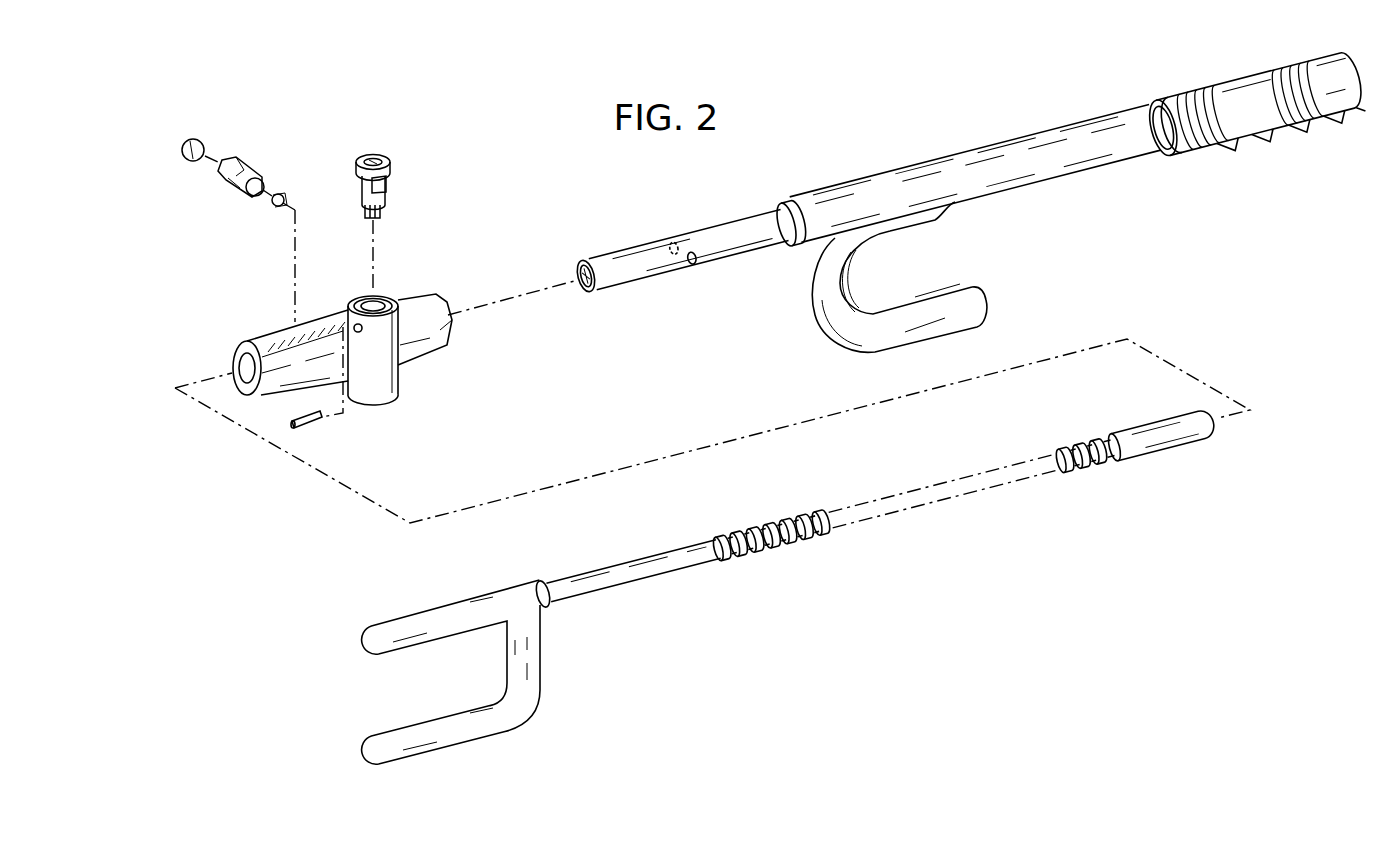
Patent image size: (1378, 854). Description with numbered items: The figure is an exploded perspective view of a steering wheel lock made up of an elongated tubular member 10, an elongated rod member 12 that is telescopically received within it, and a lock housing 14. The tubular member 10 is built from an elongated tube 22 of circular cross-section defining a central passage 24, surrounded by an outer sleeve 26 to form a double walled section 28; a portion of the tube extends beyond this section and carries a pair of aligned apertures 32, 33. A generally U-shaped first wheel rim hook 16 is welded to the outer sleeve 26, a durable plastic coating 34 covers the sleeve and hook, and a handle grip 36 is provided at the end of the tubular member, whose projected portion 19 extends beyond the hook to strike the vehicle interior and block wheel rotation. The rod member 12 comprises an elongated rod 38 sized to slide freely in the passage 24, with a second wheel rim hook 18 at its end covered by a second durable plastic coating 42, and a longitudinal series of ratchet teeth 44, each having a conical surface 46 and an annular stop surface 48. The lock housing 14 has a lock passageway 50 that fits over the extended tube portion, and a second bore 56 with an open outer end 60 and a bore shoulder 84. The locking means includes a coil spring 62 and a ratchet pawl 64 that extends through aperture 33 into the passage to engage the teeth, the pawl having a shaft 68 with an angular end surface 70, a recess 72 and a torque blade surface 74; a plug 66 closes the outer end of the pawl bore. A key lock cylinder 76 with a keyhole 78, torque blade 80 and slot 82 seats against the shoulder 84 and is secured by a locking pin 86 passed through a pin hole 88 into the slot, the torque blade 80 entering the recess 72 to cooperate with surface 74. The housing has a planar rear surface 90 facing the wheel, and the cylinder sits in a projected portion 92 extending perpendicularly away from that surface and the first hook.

The elongated tubular member 10 is at (970, 201).
The elongated rod member 12 is at (789, 586).
The lock housing 14 is at (342, 361).
The first wheel rim hook 16 is at (899, 277).
The second wheel rim hook 18 is at (451, 672).
The projected portion 19 is at (1292, 130).
The elongated tube 22 is at (681, 252).
The central passage 24 is at (585, 276).
The outer sleeve 26 is at (791, 223).
The double walled section 28 is at (975, 174).
The aperture 32 is at (673, 248).
The aperture 33 is at (692, 258).
The durable plastic coating 34 is at (1257, 110).
The handle grip 36 is at (1249, 106).
The elongated rod 38 is at (633, 571).
The second durable plastic coating 42 is at (543, 593).
The ratchet teeth 44 is at (732, 545).
The conical surface 46 is at (765, 536).
The annular stop surface 48 is at (804, 527).
The lock passageway 50 is at (290, 352).
The second bore 56 is at (373, 306).
The open outer end 60 is at (373, 306).
The coil spring 62 is at (279, 200).
The ratchet pawl 64 is at (234, 173).
The plug 66 is at (193, 150).
The shaft 68 is at (234, 183).
The angular end surface 70 is at (240, 177).
The recess 72 is at (240, 166).
The torque blade surface 74 is at (255, 187).
The key lock cylinder 76 is at (373, 187).
The keyhole 78 is at (373, 162).
The torque blade 80 is at (372, 211).
The slot 82 is at (379, 184).
The bore shoulder 84 is at (373, 306).
The locking pin 86 is at (306, 419).
The pin hole 88 is at (358, 328).
The planar rear surface 90 is at (305, 382).
The projected portion of the lock housing 92 is at (373, 350).